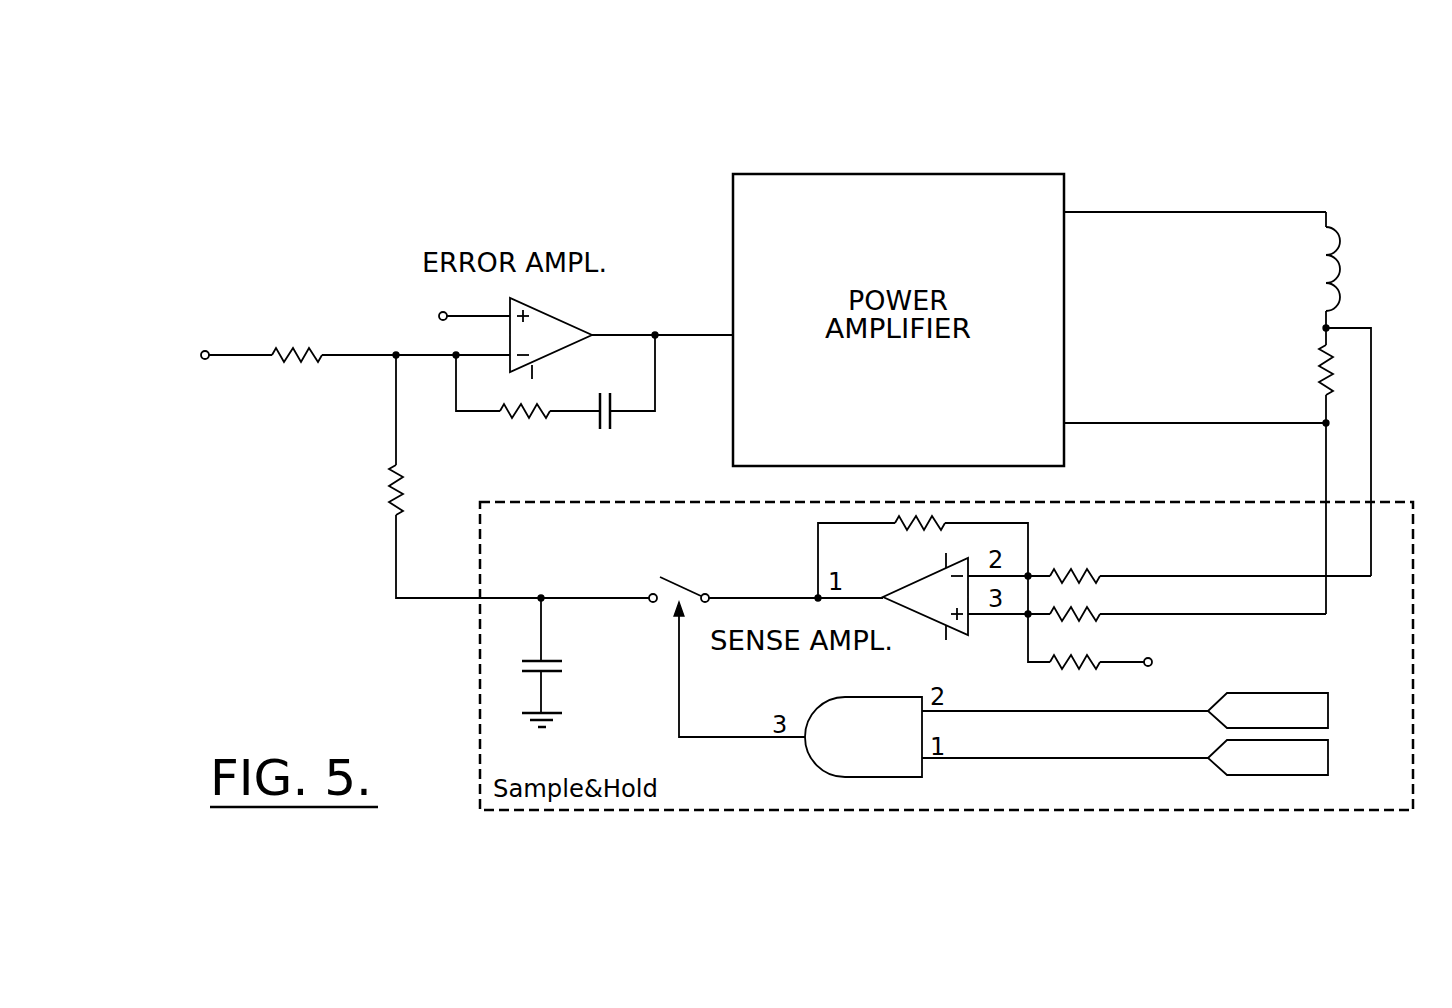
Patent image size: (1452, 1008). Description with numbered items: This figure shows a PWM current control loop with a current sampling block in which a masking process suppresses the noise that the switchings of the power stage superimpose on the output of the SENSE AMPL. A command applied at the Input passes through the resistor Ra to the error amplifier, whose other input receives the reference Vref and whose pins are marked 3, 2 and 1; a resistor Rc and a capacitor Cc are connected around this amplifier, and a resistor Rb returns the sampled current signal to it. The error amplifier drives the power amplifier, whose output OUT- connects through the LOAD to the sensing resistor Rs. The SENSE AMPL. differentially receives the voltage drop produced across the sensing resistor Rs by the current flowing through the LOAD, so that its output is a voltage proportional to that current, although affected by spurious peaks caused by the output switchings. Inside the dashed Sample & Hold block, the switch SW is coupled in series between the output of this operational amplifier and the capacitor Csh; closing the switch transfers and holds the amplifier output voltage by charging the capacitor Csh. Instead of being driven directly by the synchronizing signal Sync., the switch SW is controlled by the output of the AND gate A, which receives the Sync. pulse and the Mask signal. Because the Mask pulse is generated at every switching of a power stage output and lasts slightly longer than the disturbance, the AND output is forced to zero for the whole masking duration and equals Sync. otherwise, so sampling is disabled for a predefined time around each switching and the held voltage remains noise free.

The input terminal Input is at (203, 355).
The input resistor Ra is at (297, 340).
The feedback resistor Rb is at (376, 490).
The compensation resistor Rc is at (525, 426).
The compensation capacitor Cc is at (587, 421).
The reference voltage Vref is at (796, 490).
The error amplifier output 1 is at (662, 321).
The error amplifier inverting input 2 is at (470, 342).
The error amplifier non-inverting input 3 is at (470, 304).
The capacitor Csh is at (568, 662).
The switch SW is at (681, 578).
The AND gate A is at (863, 724).
The synchronizing signal Sync. is at (1125, 710).
The Mask signal Mask is at (1125, 757).
The negative output of power amplifier OUT- is at (1195, 411).
The load LOAD is at (1375, 270).
The sensing resistor Rs is at (1306, 375).